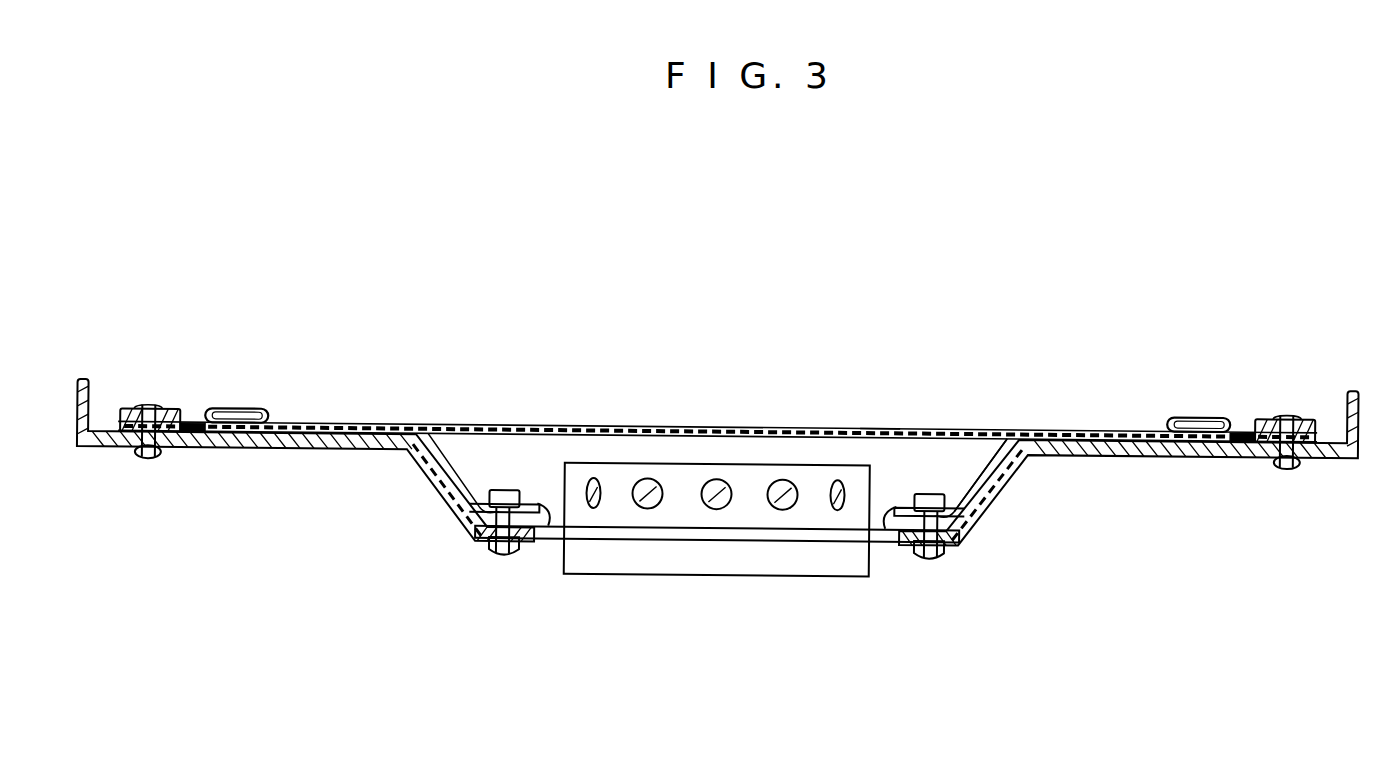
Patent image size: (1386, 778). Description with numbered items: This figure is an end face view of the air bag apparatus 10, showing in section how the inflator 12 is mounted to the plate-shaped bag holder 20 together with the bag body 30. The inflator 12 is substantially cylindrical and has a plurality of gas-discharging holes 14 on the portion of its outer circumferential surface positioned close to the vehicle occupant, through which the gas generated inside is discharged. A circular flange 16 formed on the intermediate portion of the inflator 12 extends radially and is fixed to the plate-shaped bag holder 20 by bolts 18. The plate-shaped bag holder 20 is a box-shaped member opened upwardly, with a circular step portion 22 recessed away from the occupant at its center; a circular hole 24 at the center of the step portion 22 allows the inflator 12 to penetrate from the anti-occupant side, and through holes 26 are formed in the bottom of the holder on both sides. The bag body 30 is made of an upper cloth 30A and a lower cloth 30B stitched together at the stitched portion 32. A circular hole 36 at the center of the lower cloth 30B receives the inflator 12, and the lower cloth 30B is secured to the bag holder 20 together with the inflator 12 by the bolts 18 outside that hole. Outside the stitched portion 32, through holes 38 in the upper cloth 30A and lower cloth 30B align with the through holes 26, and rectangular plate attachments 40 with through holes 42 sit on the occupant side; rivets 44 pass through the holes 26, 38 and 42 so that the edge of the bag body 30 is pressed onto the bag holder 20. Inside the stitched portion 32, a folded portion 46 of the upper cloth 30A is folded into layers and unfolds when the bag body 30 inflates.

The air bag apparatus 10 is at (800, 300).
The inflator 12 is at (712, 579).
The gas-discharging holes 14 is at (596, 508).
The circular flange 16 is at (887, 548).
The bolts 18 is at (503, 557).
The plate-shaped bag holder 20 is at (1140, 462).
The step portion 22 is at (546, 513).
The circular hole 24 is at (553, 511).
The through holes 26 is at (143, 454).
The bag body 30 is at (714, 424).
The upper cloth 30A is at (880, 424).
The lower cloth 30B is at (957, 512).
The stitched portion 32 is at (190, 420).
The circular hole 36 is at (889, 516).
The through holes 38 is at (160, 452).
The plate attachments 40 is at (130, 403).
The through holes 42 is at (147, 405).
The rivets 44 is at (156, 408).
The folded portion 46 is at (242, 408).